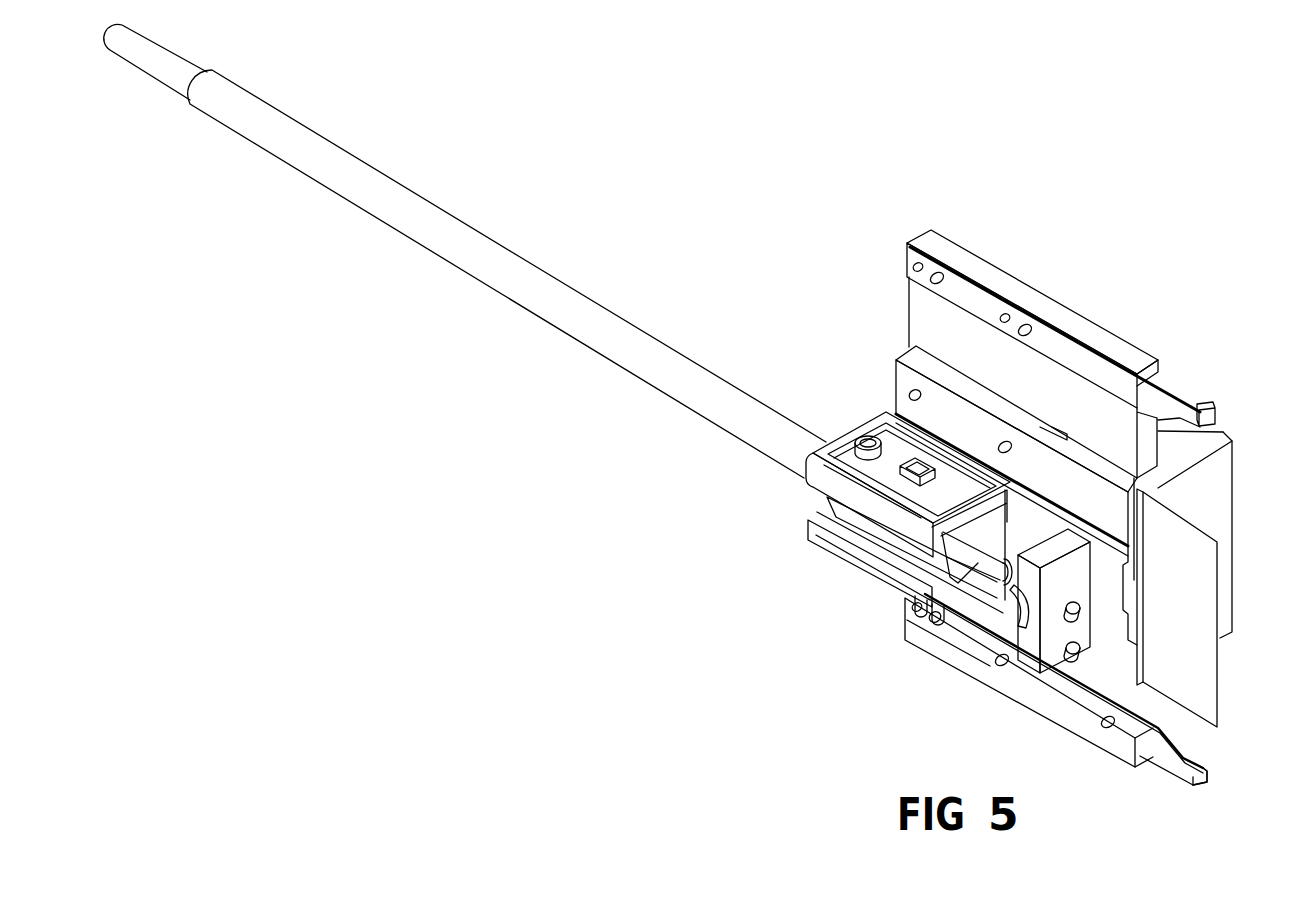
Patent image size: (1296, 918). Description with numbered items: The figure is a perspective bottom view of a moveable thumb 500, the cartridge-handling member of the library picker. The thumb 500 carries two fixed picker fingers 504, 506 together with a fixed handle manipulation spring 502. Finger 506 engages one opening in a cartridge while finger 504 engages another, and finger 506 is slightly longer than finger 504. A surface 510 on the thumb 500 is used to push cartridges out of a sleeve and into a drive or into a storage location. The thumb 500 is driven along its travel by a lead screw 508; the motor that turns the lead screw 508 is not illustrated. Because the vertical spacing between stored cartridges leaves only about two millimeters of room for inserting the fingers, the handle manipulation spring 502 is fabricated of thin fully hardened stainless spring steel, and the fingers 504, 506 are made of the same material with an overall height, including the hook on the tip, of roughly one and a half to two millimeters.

The thumb 500 is at (1030, 264).
The handle manipulation spring 502 is at (1219, 690).
The finger 504 is at (1211, 403).
The finger 506 is at (1212, 750).
The lead screw 508 is at (338, 145).
The surface 510 is at (1228, 466).